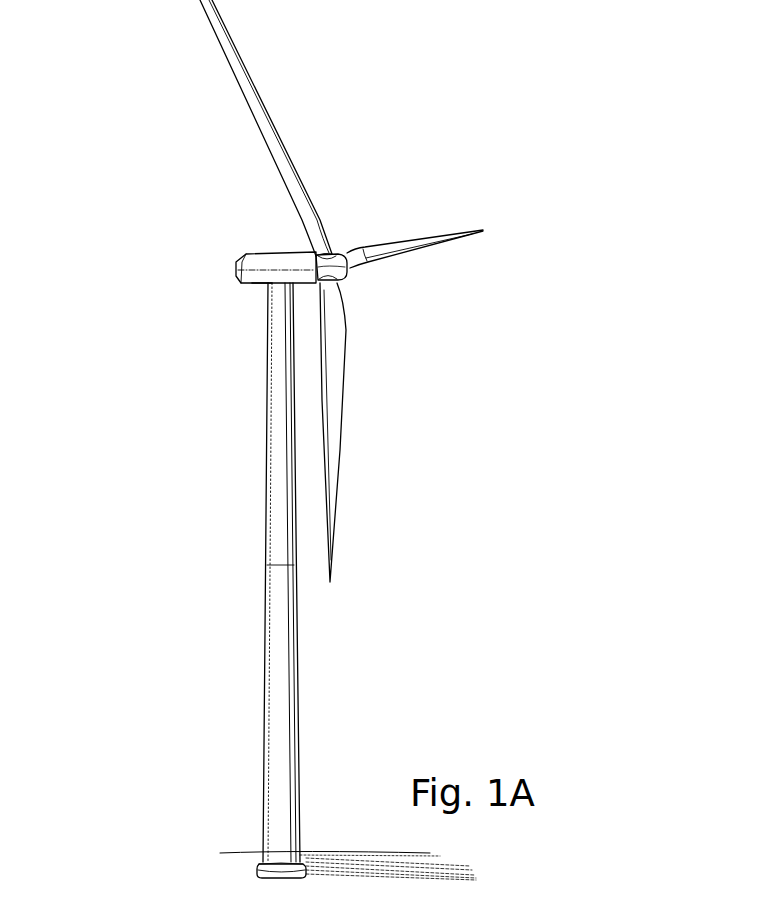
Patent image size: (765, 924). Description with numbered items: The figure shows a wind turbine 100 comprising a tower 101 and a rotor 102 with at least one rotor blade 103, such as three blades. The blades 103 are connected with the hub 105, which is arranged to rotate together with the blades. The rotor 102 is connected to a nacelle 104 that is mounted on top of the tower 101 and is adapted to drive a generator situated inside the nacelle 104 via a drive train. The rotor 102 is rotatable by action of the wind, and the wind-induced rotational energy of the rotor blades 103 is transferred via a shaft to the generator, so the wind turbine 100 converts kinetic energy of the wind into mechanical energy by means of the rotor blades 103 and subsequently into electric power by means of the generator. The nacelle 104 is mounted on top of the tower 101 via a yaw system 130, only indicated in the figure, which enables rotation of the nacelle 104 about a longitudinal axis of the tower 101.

The wind turbine 100 is at (112, 60).
The tower 101 is at (258, 565).
The rotor 102 is at (322, 173).
The rotor blade 103 is at (250, 53).
The nacelle 104 is at (233, 252).
The hub 105 is at (348, 280).
The yaw system 130 is at (262, 286).